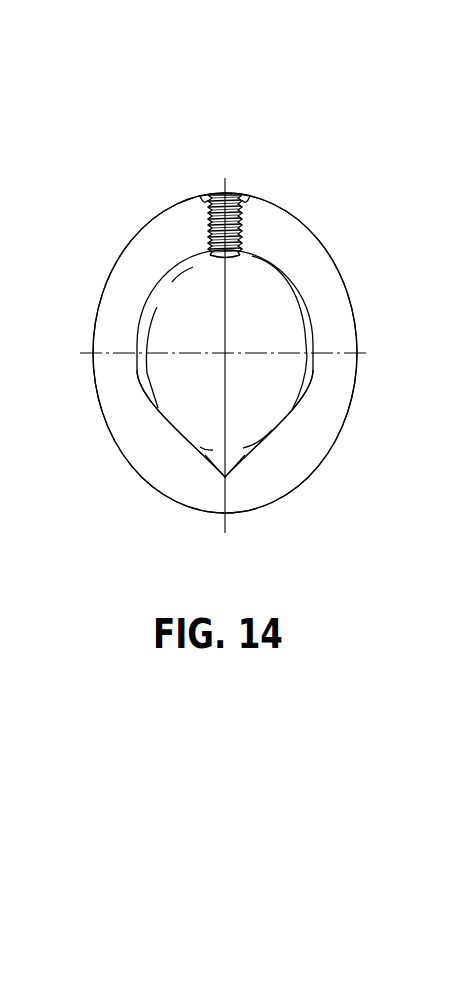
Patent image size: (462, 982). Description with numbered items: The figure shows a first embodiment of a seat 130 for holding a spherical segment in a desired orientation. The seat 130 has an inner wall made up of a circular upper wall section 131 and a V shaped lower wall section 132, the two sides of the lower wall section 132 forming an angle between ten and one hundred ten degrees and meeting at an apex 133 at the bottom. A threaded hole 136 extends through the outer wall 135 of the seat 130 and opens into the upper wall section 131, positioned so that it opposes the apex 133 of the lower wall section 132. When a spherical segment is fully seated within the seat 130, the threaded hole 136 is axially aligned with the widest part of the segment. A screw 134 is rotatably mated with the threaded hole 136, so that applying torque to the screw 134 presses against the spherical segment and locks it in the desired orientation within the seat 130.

The seat 130 is at (150, 112).
The circular upper wall section 131 is at (243, 256).
The V shaped lower wall section 132 is at (270, 431).
The apex 133 is at (226, 478).
The screw 134 is at (236, 199).
The outer wall 135 is at (325, 248).
The threaded hole 136 is at (202, 197).